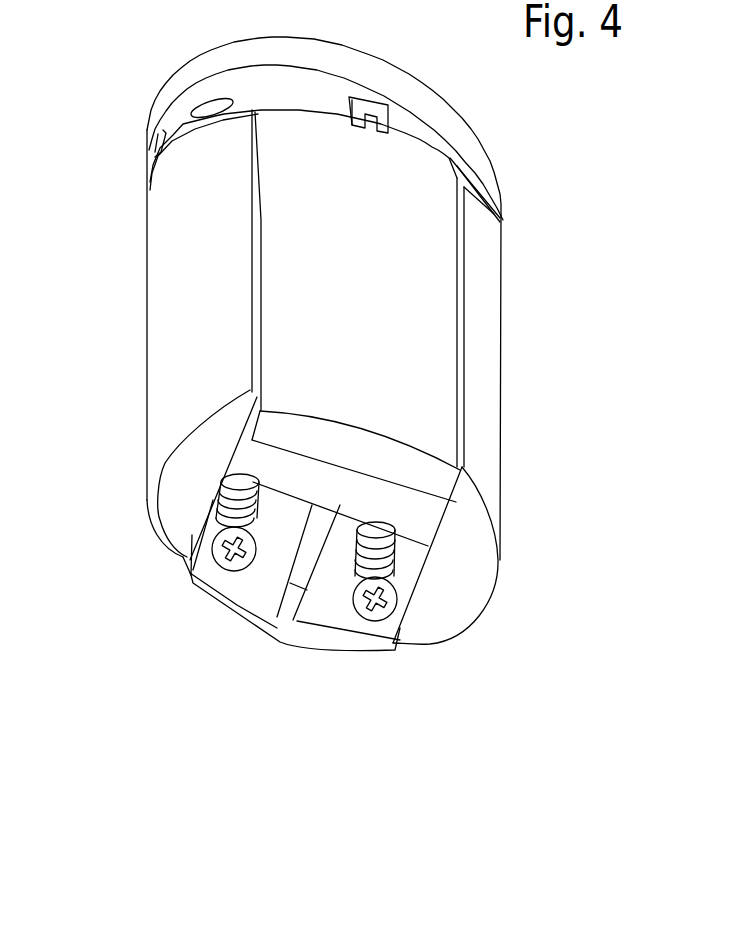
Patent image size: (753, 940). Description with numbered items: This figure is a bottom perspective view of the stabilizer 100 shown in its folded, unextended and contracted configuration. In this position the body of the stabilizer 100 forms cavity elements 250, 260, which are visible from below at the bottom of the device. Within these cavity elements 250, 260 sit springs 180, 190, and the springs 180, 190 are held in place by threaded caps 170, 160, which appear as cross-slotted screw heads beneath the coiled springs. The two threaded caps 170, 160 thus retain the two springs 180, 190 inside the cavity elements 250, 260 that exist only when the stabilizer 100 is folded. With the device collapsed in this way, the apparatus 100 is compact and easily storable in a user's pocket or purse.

The stabilizer 100 is at (325, 340).
The threaded cap 160 is at (385, 600).
The threaded cap 170 is at (233, 555).
The spring 180 is at (245, 502).
The spring 190 is at (380, 547).
The cavity element 250 is at (273, 522).
The cavity element 260 is at (335, 605).